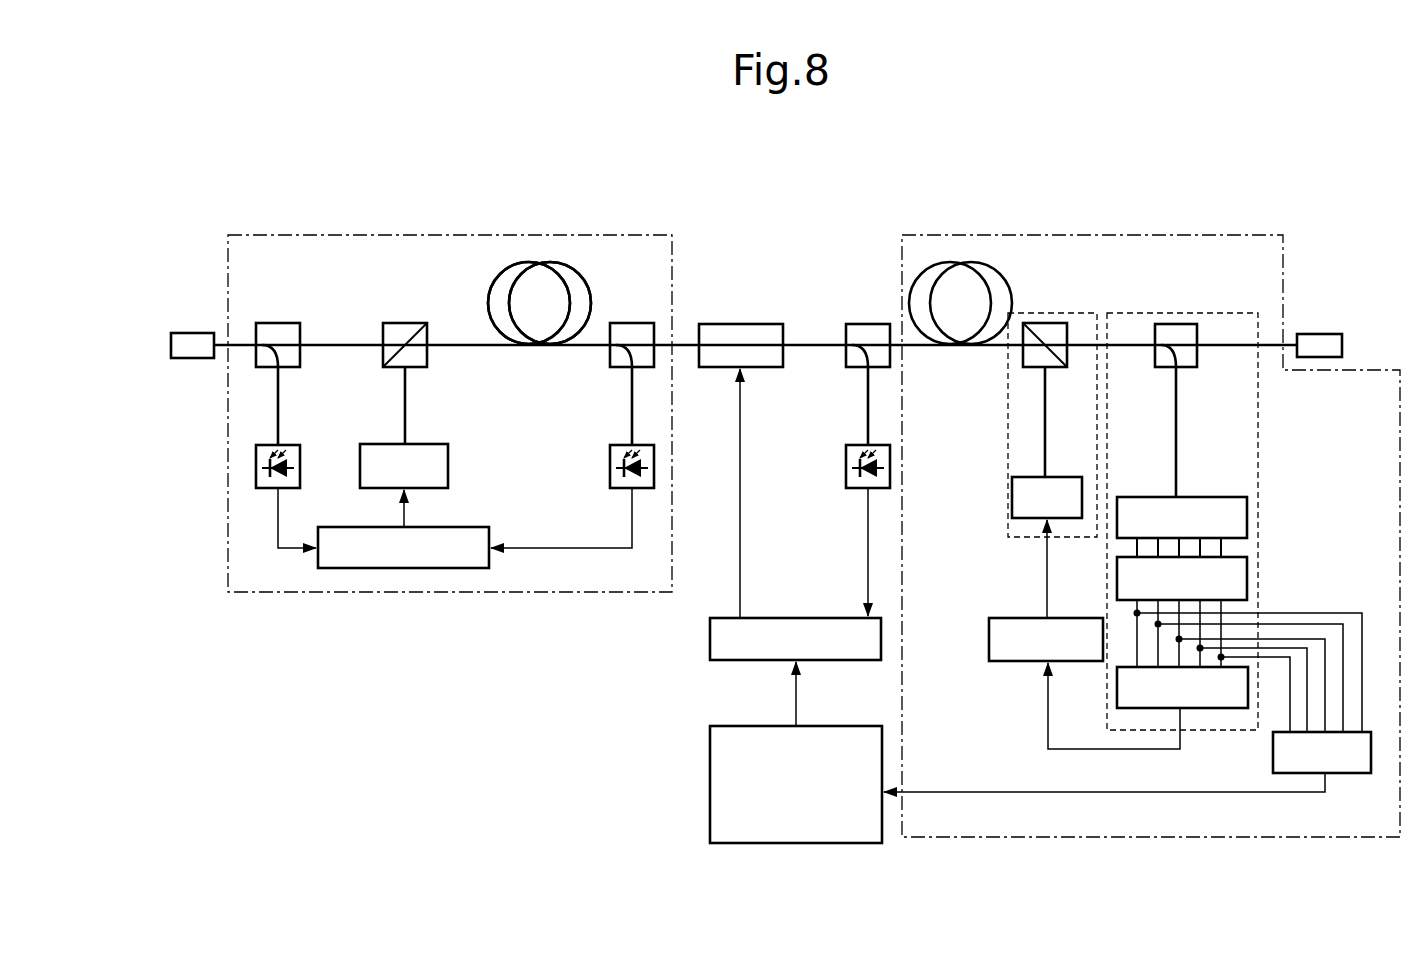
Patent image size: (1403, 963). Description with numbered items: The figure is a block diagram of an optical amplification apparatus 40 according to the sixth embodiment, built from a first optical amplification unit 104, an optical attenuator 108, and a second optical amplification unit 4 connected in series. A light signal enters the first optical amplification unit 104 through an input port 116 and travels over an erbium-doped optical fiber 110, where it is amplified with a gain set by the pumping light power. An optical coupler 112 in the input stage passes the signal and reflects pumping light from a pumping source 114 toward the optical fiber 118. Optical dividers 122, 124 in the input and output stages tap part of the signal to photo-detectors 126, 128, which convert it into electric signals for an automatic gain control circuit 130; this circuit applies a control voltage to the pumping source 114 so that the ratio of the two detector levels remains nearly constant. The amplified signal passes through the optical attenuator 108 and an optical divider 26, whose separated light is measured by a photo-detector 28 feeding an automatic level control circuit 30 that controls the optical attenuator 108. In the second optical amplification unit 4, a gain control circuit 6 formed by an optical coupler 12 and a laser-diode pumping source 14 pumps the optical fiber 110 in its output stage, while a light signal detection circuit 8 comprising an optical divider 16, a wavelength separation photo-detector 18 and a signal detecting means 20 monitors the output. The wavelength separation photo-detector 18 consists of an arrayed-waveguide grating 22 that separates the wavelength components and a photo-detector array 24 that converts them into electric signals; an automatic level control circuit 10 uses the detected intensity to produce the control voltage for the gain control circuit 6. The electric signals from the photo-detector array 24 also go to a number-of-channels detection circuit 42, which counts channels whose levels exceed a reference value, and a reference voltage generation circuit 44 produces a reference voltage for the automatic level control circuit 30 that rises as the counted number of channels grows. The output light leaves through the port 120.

The second optical amplification unit 4 is at (1118, 235).
The gain control circuit 6 is at (1007, 440).
The light signal detection circuit 8 is at (1259, 397).
The automatic level control circuit 10 is at (998, 617).
The optical coupler 12 is at (1046, 322).
The pumping source 14 is at (1064, 477).
The optical divider 16 is at (1178, 323).
The wavelength separation photo-detector 18 is at (1246, 546).
The signal detecting means 20 is at (1130, 708).
The arrayed-waveguide grating 22 is at (1248, 518).
The photo-detector array 24 is at (1218, 578).
The optical divider 26 is at (871, 323).
The photo-detector 28 is at (850, 444).
The automatic level control circuit 30 is at (826, 618).
The optical amplification apparatus 40 is at (764, 190).
The number-of-channels detection circuit 42 is at (1356, 774).
The reference voltage generation circuit 44 is at (768, 726).
The first optical amplification unit 104 is at (357, 235).
The optical attenuator 108 is at (755, 323).
The optical fiber 110 is at (565, 249).
The optical coupler 112 is at (405, 322).
The pumping source 114 is at (438, 444).
The input port 116 is at (186, 332).
The optical fiber 118 is at (503, 258).
The output port 120 is at (1318, 333).
The optical divider 122 is at (279, 322).
The optical divider 124 is at (633, 322).
The photo-detector 126 is at (300, 444).
The photo-detector 128 is at (612, 444).
The automatic gain control circuit 130 is at (471, 527).